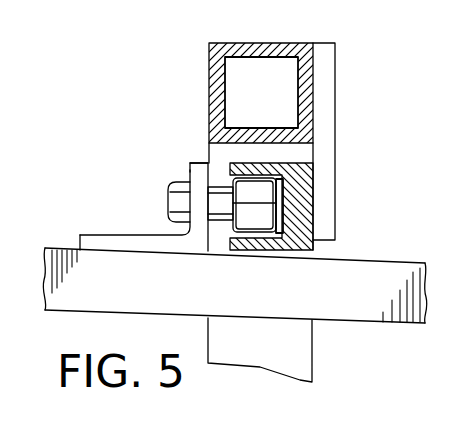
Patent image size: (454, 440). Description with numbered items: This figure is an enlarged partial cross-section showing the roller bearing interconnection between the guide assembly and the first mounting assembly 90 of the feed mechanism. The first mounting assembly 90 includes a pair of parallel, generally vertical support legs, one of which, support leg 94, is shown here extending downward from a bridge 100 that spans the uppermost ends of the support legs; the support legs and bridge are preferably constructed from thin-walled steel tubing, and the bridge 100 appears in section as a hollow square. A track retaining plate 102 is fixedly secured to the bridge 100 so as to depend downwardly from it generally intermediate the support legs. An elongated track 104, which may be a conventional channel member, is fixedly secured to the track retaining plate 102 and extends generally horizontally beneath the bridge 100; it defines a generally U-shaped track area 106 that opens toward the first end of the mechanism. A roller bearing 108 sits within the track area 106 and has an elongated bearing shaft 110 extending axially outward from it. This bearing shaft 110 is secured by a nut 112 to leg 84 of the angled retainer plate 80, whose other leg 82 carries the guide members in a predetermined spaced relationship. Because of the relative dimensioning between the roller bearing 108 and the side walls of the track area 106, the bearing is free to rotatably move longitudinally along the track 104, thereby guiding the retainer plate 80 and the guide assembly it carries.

The angled retainer plate 80 is at (156, 200).
The leg 82 is at (108, 240).
The leg 84 is at (204, 163).
The first mounting assembly 90 is at (346, 189).
The support leg 94 is at (293, 360).
The bridge 100 is at (253, 43).
The track retaining plate 102 is at (327, 88).
The elongated track 104 is at (304, 243).
The U-shaped track area 106 is at (277, 235).
The roller bearing 108 is at (276, 202).
The bearing shaft 110 is at (218, 221).
The nut 112 is at (175, 182).